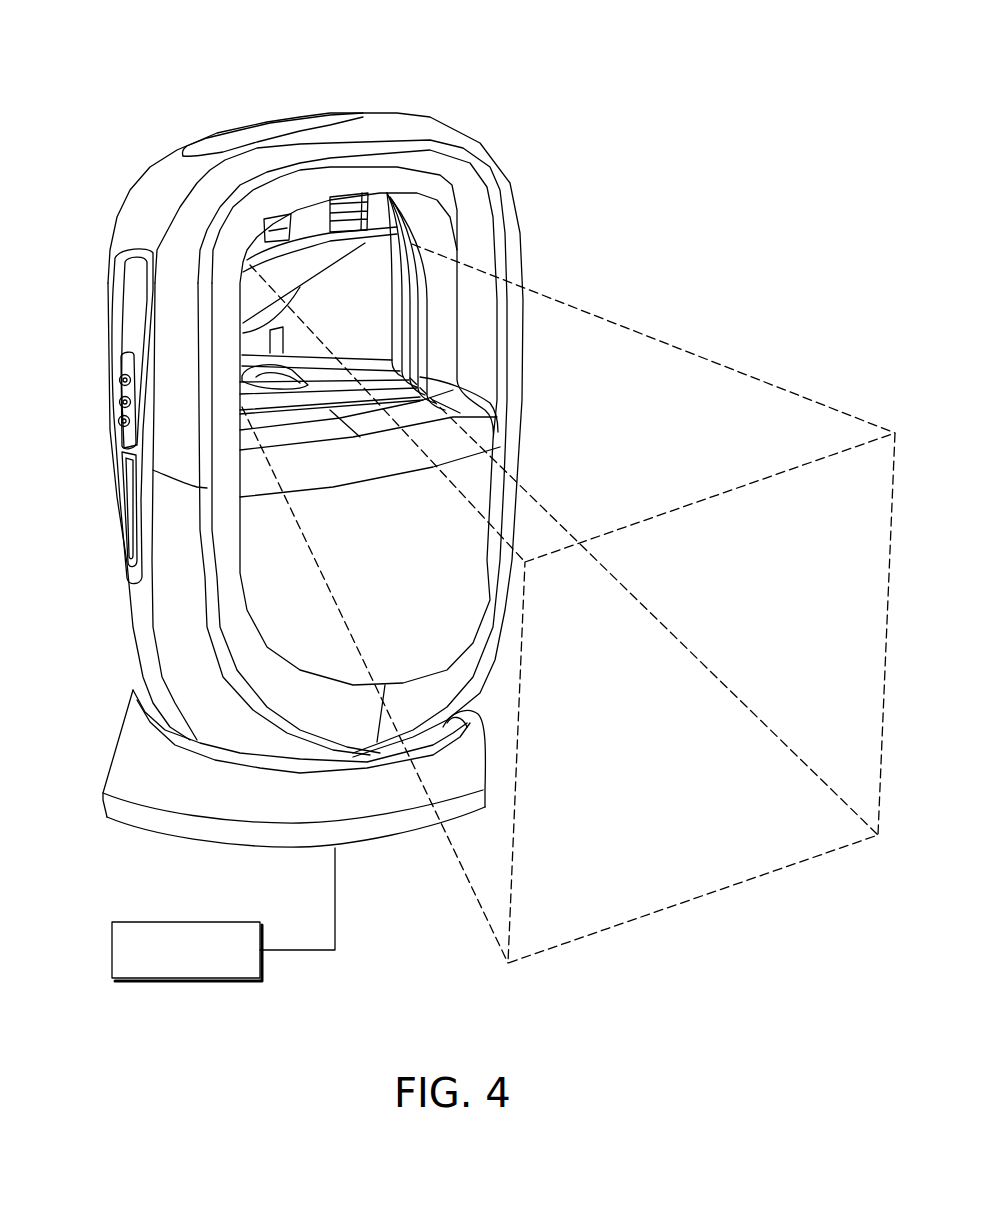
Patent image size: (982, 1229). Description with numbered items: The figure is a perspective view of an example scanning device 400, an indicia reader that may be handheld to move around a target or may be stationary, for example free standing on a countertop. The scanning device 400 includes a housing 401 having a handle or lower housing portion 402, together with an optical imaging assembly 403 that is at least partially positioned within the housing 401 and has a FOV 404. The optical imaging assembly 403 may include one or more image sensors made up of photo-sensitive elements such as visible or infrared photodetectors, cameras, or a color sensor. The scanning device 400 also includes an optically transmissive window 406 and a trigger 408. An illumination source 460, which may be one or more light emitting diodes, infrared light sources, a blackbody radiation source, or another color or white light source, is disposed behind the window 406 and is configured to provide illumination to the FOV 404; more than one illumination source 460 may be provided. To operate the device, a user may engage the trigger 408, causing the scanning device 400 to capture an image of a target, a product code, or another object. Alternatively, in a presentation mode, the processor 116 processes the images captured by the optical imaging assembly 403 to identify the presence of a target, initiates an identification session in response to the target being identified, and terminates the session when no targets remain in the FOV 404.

The scanning device 400 is at (110, 54).
The housing 401 is at (178, 645).
The lower housing portion 402 is at (183, 700).
The optical imaging assembly 403 is at (400, 349).
The FOV 404 is at (497, 930).
The optically transmissive window 406 is at (387, 217).
The trigger 408 is at (113, 393).
The illumination source 460 is at (350, 197).
The processor 116 is at (112, 950).